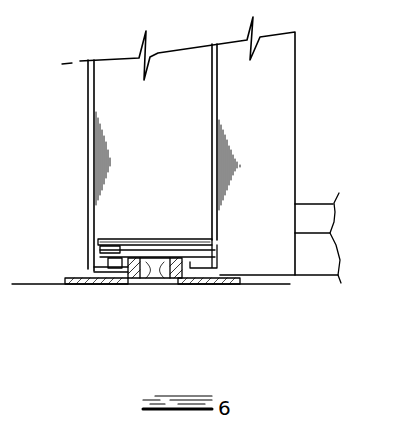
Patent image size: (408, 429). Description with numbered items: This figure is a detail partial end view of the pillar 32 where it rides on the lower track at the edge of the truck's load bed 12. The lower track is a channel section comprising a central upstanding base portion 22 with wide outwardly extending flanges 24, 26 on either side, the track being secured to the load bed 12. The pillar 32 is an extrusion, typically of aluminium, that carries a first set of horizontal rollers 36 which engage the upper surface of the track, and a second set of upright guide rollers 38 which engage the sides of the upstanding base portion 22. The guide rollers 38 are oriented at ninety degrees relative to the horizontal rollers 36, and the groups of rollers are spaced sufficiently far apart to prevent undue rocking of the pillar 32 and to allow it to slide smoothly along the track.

The load bed 12 is at (263, 298).
The central upstanding base portion 22 is at (150, 285).
The outwardly extending flange 24 is at (195, 288).
The outwardly extending flange 26 is at (90, 288).
The pillar 32 is at (124, 157).
The horizontal rollers 36 is at (150, 238).
The upright guide rollers 38 is at (108, 263).